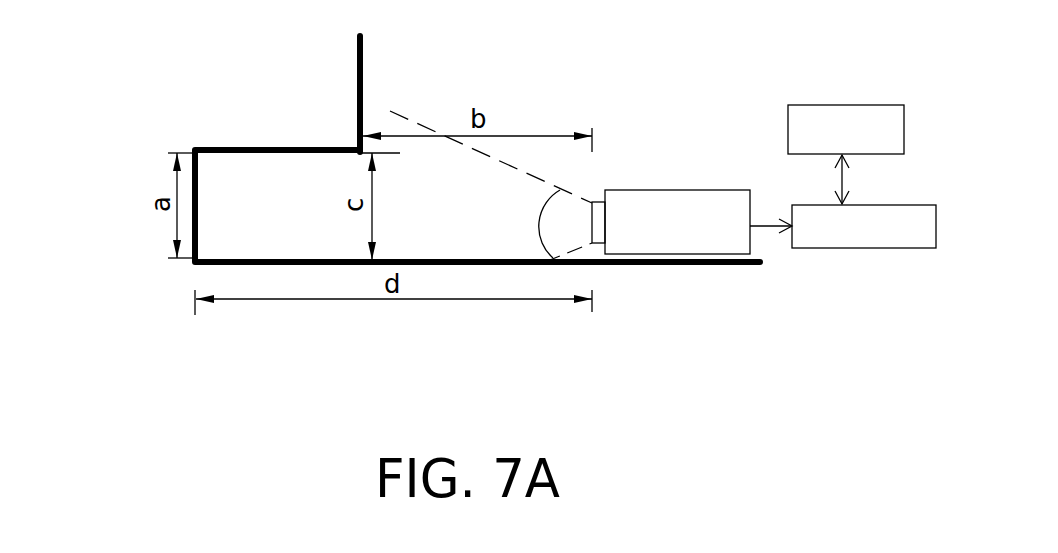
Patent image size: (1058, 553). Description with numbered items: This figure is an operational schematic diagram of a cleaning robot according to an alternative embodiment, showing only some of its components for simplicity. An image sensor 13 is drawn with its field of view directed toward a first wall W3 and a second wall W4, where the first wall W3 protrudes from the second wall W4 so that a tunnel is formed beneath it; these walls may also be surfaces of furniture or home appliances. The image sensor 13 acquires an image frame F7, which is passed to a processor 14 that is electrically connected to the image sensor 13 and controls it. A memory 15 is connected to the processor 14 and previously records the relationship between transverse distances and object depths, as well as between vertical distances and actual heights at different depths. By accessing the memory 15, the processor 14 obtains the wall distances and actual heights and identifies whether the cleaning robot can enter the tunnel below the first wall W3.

The image sensor 13 is at (678, 196).
The processor 14 is at (840, 248).
The memory 15 is at (840, 105).
The first wall W3 is at (358, 60).
The second wall W4 is at (195, 183).
The image frame F7 is at (771, 209).